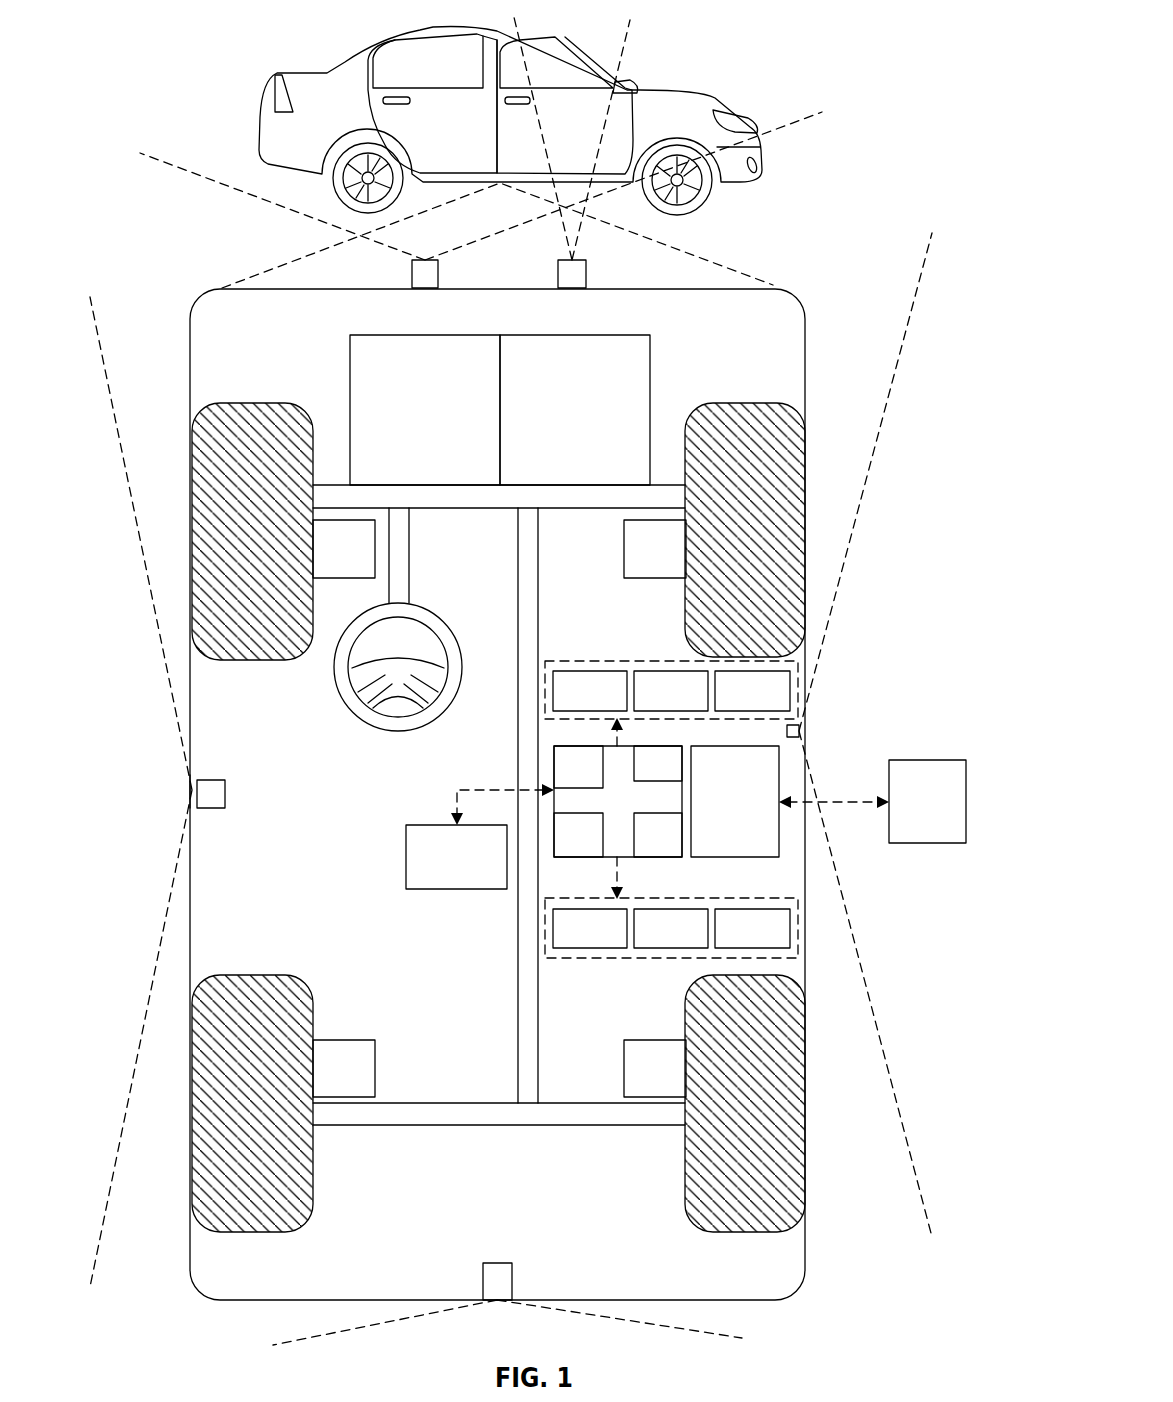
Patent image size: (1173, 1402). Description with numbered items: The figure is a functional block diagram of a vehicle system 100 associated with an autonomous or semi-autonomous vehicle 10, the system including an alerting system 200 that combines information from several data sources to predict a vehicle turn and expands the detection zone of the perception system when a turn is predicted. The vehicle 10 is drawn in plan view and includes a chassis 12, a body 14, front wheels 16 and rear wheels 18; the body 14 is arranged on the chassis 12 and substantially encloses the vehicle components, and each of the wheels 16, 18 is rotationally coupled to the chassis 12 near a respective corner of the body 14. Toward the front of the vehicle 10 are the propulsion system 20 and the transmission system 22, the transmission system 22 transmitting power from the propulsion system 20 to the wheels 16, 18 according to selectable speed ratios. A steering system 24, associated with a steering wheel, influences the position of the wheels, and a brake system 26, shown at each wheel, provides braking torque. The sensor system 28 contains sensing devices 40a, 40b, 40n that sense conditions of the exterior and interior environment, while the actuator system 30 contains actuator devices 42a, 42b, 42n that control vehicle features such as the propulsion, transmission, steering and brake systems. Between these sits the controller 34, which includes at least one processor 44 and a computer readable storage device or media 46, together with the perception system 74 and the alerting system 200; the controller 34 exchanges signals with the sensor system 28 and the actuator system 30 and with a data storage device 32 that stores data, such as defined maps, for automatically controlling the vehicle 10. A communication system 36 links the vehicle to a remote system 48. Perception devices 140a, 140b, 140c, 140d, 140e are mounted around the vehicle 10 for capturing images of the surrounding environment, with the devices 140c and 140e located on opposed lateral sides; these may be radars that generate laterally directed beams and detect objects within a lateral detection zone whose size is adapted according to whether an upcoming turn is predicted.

The vehicle 10 is at (266, 106).
The vehicle system 100 is at (800, 250).
The chassis 12 is at (517, 962).
The body 14 is at (192, 790).
The front wheels 16 is at (247, 403).
The rear wheels 18 is at (253, 1233).
The propulsion system 20 is at (410, 425).
The transmission system 22 is at (557, 425).
The steering system 24 is at (419, 581).
The brake system 26 is at (329, 563).
The sensor system 28 is at (671, 672).
The actuator system 30 is at (671, 949).
The data storage device 32 is at (442, 871).
The controller 34 is at (618, 808).
The communication system 36 is at (720, 816).
The sensing device 40a is at (568, 705).
The sensing device 40b is at (649, 705).
The sensing device 40n is at (730, 705).
The actuator device 42a is at (568, 943).
The actuator device 42b is at (649, 943).
The actuator device 42n is at (730, 943).
The processor 44 is at (563, 849).
The computer readable storage device or media 46 is at (643, 849).
The remote server 48 is at (912, 816).
The perception system 74 is at (563, 781).
The alerting system 200 is at (636, 776).
The perception device 140a is at (412, 272).
The perception device 140b is at (586, 272).
The perception device 140c is at (226, 795).
The perception device 140d is at (497, 1263).
The perception device 140e is at (800, 731).